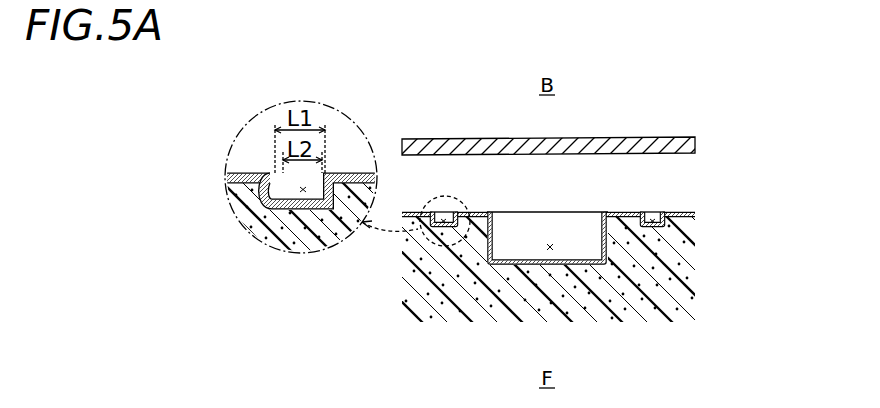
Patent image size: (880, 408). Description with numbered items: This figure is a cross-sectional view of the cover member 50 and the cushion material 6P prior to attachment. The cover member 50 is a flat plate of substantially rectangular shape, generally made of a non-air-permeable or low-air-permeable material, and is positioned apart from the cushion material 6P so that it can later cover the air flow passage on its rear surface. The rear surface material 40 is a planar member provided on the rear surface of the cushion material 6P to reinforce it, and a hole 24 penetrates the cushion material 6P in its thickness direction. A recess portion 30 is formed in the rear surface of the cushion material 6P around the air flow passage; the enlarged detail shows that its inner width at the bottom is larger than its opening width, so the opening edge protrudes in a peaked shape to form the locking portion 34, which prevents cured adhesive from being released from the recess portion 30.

The recess portion 30 is at (443, 212).
The rear surface material 40 is at (680, 212).
The cover member 50 is at (632, 148).
The locking portion 34 is at (262, 206).
The hole 24 is at (552, 250).
The cushion material 6P is at (672, 272).